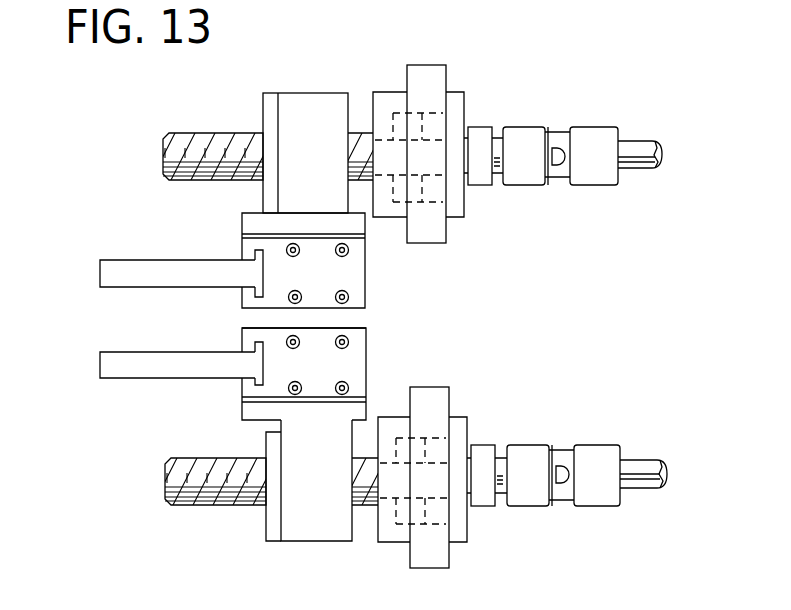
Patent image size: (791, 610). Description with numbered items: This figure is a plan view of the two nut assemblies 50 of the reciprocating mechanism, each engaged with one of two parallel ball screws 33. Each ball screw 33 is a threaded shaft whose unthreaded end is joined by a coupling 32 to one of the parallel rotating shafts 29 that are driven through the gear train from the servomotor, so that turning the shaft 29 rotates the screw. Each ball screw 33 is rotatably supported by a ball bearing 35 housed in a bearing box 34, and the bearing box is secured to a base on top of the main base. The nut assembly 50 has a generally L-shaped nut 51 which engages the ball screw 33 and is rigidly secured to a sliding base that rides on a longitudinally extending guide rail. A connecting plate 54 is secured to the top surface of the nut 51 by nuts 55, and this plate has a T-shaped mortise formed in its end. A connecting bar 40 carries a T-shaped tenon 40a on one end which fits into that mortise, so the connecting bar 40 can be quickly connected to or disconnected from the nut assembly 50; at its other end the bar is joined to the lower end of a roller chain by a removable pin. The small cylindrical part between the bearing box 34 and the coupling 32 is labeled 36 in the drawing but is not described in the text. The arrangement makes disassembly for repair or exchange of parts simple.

The rotating shaft 29 is at (642, 145).
The coupling 32 is at (591, 130).
The ball screw 33 is at (193, 146).
The bearing box 34 is at (433, 77).
The ball bearing 35 is at (432, 113).
The coupling sleeve 36 is at (457, 117).
The connecting bar 40 is at (158, 260).
The T-shaped tenon 40a is at (258, 271).
The nut assembly 50 is at (368, 278).
The nut 51 is at (307, 533).
The connecting plate 54 is at (356, 343).
The nut 55 is at (293, 383).